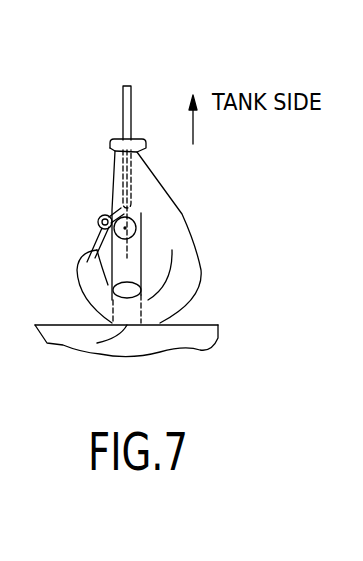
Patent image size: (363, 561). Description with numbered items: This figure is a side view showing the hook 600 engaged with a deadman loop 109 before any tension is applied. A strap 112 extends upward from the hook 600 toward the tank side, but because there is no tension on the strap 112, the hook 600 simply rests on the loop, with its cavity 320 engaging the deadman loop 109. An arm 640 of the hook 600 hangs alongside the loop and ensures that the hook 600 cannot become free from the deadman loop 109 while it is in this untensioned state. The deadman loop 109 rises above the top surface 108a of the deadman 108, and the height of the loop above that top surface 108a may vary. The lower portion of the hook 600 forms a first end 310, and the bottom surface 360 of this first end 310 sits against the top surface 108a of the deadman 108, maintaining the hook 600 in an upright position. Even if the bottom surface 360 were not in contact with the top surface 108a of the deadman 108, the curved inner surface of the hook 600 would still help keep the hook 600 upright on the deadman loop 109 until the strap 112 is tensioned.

The strap 112 is at (126, 112).
The cavity 320 is at (112, 208).
The arm 640 is at (95, 250).
The hook 600 is at (158, 193).
The deadman loop 109 is at (128, 258).
The first end 310 is at (145, 292).
The top surface 108a is at (199, 318).
The deadman 108 is at (205, 352).
The bottom surface 360 is at (97, 343).